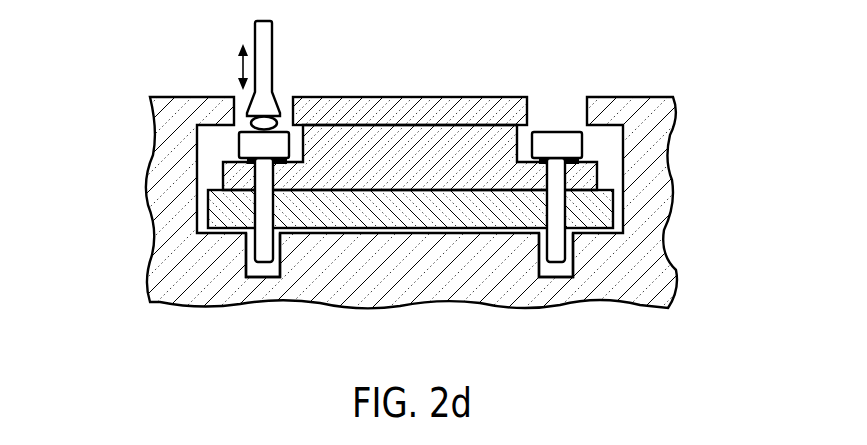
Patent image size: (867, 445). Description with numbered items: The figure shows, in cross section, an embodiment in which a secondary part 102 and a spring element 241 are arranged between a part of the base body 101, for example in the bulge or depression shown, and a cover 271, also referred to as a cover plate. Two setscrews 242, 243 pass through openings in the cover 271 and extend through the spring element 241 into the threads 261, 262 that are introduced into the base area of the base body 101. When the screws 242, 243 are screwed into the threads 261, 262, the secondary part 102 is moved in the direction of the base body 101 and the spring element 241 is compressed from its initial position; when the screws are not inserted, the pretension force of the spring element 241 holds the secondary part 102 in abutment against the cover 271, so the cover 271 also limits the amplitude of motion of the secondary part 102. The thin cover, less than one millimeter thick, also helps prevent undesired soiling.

The base body 101 is at (642, 103).
The secondary part 102 is at (446, 138).
The cover 271 is at (389, 103).
The spring element 241 is at (620, 220).
The setscrew 242 is at (258, 254).
The setscrew 243 is at (560, 253).
The thread 261 is at (277, 278).
The thread 262 is at (568, 278).